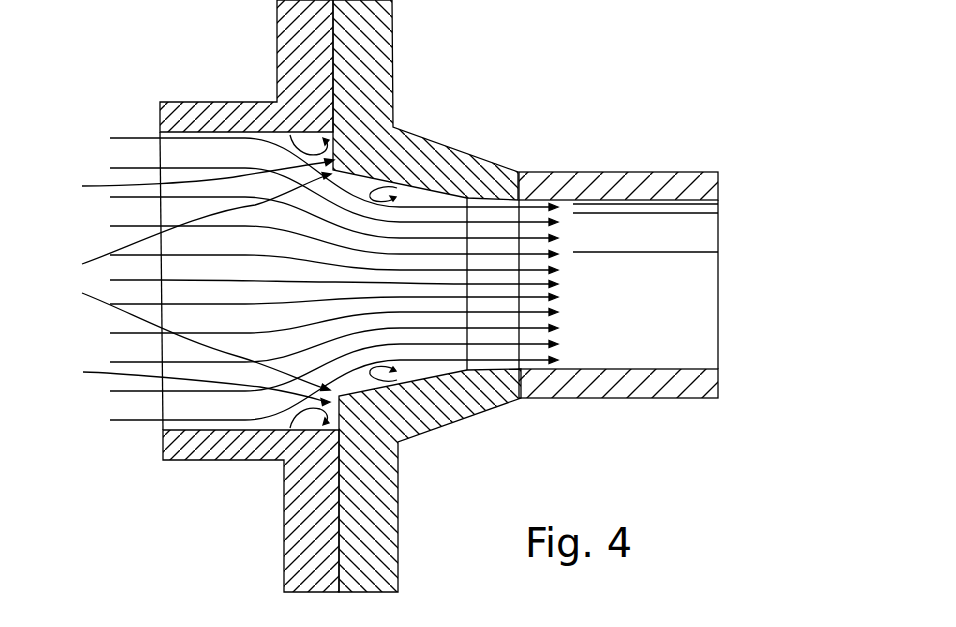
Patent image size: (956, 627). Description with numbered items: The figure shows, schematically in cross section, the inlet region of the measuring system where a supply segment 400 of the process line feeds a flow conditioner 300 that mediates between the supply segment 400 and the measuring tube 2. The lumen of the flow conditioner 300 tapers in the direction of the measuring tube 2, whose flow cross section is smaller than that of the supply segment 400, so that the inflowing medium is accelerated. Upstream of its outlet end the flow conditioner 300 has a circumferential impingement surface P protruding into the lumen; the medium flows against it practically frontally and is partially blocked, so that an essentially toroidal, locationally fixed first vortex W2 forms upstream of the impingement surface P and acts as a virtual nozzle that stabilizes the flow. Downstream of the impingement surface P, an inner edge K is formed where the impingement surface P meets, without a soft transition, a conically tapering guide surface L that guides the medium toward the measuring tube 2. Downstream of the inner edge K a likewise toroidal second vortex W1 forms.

The supply segment 400 is at (188, 110).
The flow conditioner 300 is at (402, 153).
The measuring tube 2 is at (627, 398).
The second vortex W1 is at (428, 460).
The first vortex W2 is at (248, 488).
The guide surface L is at (451, 179).
The impingement surface P is at (195, 282).
The inner edge K is at (308, 282).